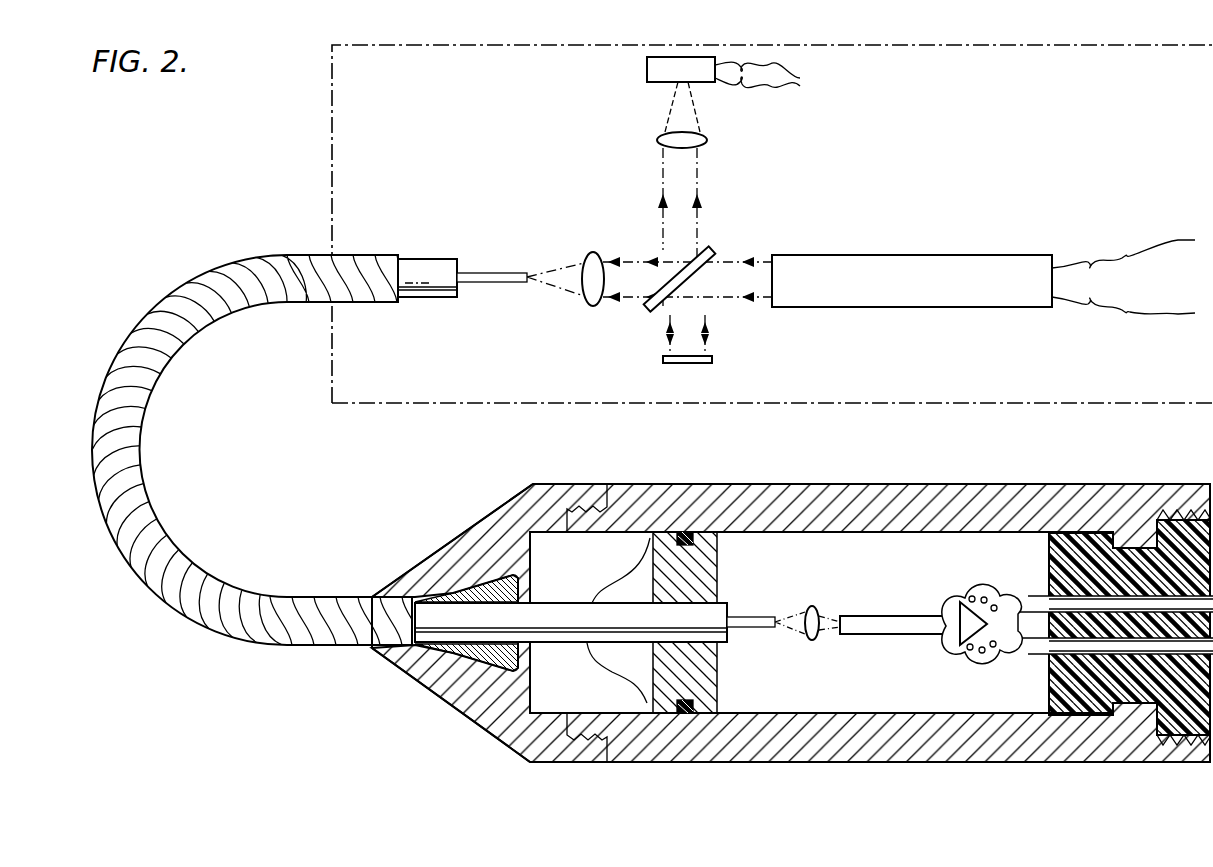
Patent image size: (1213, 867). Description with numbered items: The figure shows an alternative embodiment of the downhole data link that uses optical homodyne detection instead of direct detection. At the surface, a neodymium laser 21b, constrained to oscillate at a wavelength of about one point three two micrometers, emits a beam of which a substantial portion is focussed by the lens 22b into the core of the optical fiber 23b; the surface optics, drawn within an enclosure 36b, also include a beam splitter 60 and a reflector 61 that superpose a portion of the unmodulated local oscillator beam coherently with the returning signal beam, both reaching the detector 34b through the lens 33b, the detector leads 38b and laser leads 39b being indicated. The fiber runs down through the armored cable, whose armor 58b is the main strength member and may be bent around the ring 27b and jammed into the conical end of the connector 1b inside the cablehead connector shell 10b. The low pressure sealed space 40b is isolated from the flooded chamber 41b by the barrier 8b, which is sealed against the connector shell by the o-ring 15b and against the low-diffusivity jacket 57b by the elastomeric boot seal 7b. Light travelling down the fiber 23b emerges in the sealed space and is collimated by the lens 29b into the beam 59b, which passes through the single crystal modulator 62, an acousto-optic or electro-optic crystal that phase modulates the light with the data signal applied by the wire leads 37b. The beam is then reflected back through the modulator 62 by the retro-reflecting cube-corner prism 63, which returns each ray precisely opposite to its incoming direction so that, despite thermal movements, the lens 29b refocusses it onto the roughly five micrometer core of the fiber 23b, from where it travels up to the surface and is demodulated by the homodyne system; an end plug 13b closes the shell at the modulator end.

The connector 1b is at (507, 732).
The boot seal 7b is at (643, 692).
The barrier 8b is at (719, 677).
The connector shell 10b is at (958, 752).
The end plug connector 13b is at (1050, 682).
The o-ring 15b is at (686, 538).
The neodymium laser 21b is at (897, 255).
The lens 22b is at (592, 254).
The optical fiber 23b is at (498, 283).
The ring 27b is at (503, 657).
The lens 29b is at (812, 642).
The lens 33b is at (708, 143).
The detector 34b is at (651, 70).
The surface unit enclosure 36b is at (342, 177).
The wire leads 37b is at (983, 662).
The detector leads 38b is at (800, 79).
The laser power leads 39b is at (1163, 310).
The sealed space 40b is at (905, 700).
The flooded chamber 41b is at (597, 698).
The low-diffusivity jacket 57b is at (436, 300).
The armor 58b is at (349, 303).
The beam 59b is at (833, 642).
The beam splitter 60 is at (651, 312).
The reflector 61 is at (714, 358).
The single crystal modulator 62 is at (878, 616).
The retro-reflecting cube-corner prism 63 is at (986, 606).